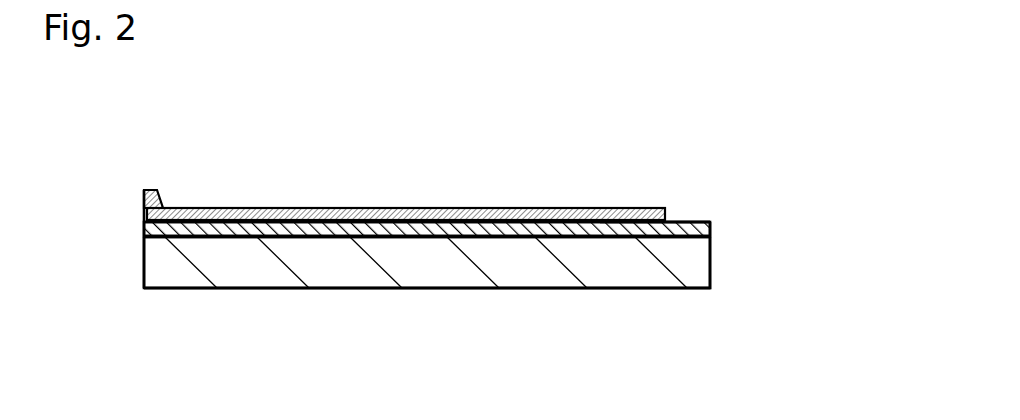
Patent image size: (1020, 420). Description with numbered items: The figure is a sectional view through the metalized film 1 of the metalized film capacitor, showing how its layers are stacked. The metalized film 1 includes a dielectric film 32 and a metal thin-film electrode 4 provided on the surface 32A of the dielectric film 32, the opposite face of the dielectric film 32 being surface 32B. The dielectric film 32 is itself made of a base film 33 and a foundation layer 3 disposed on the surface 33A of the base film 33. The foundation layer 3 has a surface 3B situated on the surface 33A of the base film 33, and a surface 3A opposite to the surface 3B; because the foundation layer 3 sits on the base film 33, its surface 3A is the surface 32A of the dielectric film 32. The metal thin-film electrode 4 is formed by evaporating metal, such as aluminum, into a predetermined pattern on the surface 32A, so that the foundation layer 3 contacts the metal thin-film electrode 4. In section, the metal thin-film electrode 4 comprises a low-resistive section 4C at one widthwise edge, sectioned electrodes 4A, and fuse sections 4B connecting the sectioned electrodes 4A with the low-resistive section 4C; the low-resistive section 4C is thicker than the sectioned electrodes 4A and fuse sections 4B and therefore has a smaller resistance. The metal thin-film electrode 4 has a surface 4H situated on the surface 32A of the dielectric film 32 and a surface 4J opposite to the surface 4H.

The metalized film 1 is at (427, 197).
The foundation layer 3 is at (168, 237).
The surface of foundation layer 3A is at (350, 237).
The surface of foundation layer 3B is at (437, 237).
The metal thin-film electrode 4 is at (512, 207).
The sectioned electrode 4A is at (447, 207).
The fuse section 4B is at (180, 209).
The low-resistive section 4C is at (158, 192).
The surface of metal thin-film electrode 4H is at (530, 222).
The surface of metal thin-film electrode 4J is at (555, 207).
The dielectric film 32 is at (247, 338).
The surface of dielectric film 32A is at (297, 210).
The surface of dielectric film 32B is at (355, 290).
The base film 33 is at (227, 273).
The surface of base film 33A is at (627, 221).